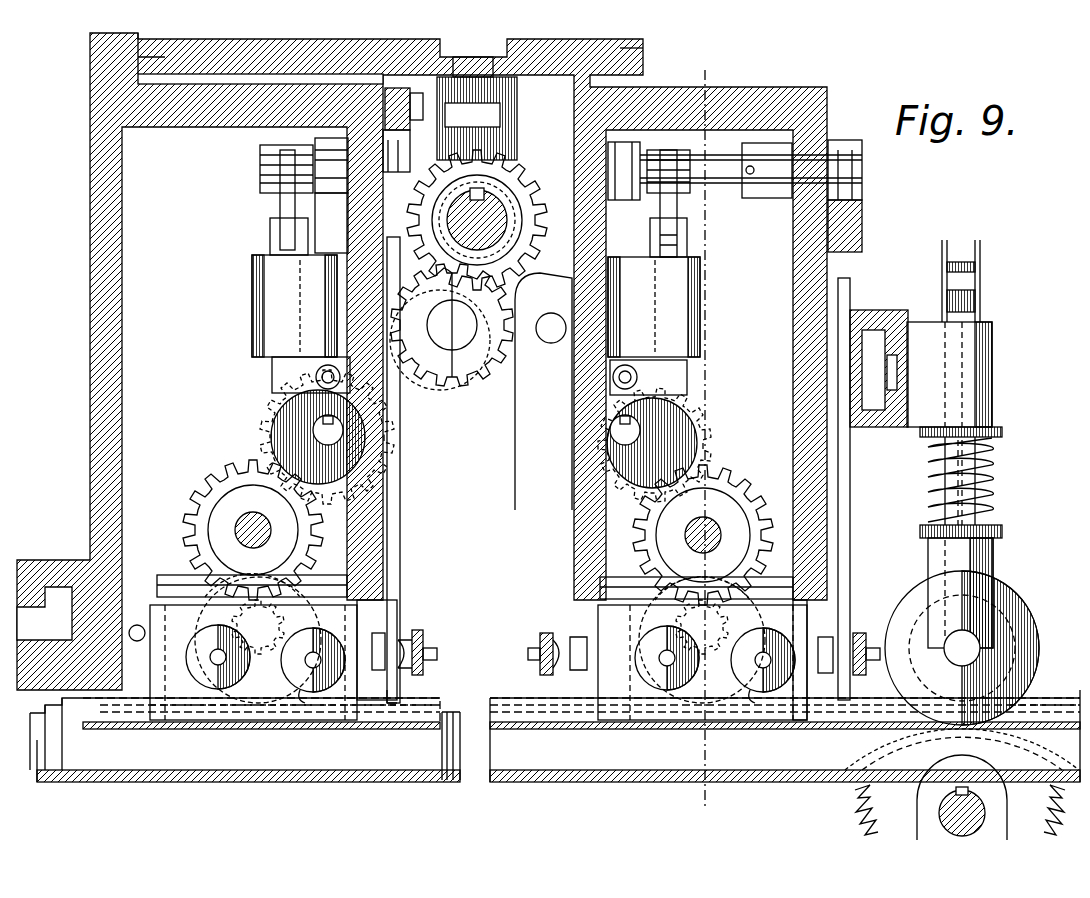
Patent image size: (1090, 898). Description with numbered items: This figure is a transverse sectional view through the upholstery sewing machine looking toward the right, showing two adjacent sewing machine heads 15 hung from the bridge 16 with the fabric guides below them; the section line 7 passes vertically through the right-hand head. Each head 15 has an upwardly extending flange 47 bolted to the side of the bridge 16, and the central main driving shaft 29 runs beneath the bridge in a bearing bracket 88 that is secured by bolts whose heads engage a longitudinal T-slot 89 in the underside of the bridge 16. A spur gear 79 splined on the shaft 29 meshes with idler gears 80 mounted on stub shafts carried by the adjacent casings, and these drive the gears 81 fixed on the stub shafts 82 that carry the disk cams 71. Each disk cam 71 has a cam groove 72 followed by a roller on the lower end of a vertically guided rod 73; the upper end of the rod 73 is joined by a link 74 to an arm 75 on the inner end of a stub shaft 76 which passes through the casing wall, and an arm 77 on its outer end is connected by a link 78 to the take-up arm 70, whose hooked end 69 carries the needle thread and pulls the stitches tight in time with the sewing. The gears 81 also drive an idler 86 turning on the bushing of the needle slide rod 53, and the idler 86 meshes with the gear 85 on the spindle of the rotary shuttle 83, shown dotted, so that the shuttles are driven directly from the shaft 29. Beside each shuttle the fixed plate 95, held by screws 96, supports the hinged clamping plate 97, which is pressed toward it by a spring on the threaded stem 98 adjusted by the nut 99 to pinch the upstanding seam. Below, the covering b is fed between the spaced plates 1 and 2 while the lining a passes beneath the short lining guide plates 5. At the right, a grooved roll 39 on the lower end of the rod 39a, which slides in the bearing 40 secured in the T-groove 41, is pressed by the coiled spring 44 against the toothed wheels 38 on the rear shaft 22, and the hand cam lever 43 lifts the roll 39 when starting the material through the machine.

The plate 1 is at (412, 782).
The plate 2 is at (360, 760).
The lining guide plates 5 is at (490, 705).
The section line 7 is at (703, 439).
The sewing machine heads 15 is at (90, 260).
The supporting frame member 16 is at (90, 60).
The shafts 22 is at (935, 810).
The main driving shaft 29 is at (480, 212).
The toothed wheels 38 is at (855, 808).
The grooved rolls 39 is at (1002, 610).
The vertical bar or rod 39a is at (940, 480).
The bearing 40 is at (975, 380).
The T-groove 41 is at (875, 310).
The cam levers 43 is at (960, 280).
The coiled springs 44 is at (995, 475).
The flange 47 is at (646, 50).
The rod 53 is at (245, 530).
The hooked ends or eyes 69 is at (305, 703).
The take-up arms 70 is at (400, 545).
The disk cams 71 is at (285, 403).
The cam groove 72 is at (300, 437).
The vertically guided rod 73 is at (270, 240).
The link 74 is at (262, 172).
The arm 75 is at (690, 138).
The stub shaft 76 is at (325, 210).
The arm 77 is at (400, 160).
The link 78 is at (410, 125).
The spur gear 79 is at (535, 200).
The idler gears 80 is at (440, 370).
The gears 81 is at (262, 418).
The stub shafts 82 is at (343, 433).
The rotary shuttle 83 is at (290, 555).
The gear 85 is at (185, 575).
The idler 86 is at (222, 500).
The bearing bracket 88 is at (517, 110).
The T-slot 89 is at (520, 85).
The plate 95 is at (370, 610).
The screws 96 is at (418, 630).
The guide and clamping plate 97 is at (168, 617).
The screw-threaded stem 98 is at (218, 657).
The nut 99 is at (205, 680).
The lining a is at (418, 705).
The outer fabric covering b is at (452, 752).